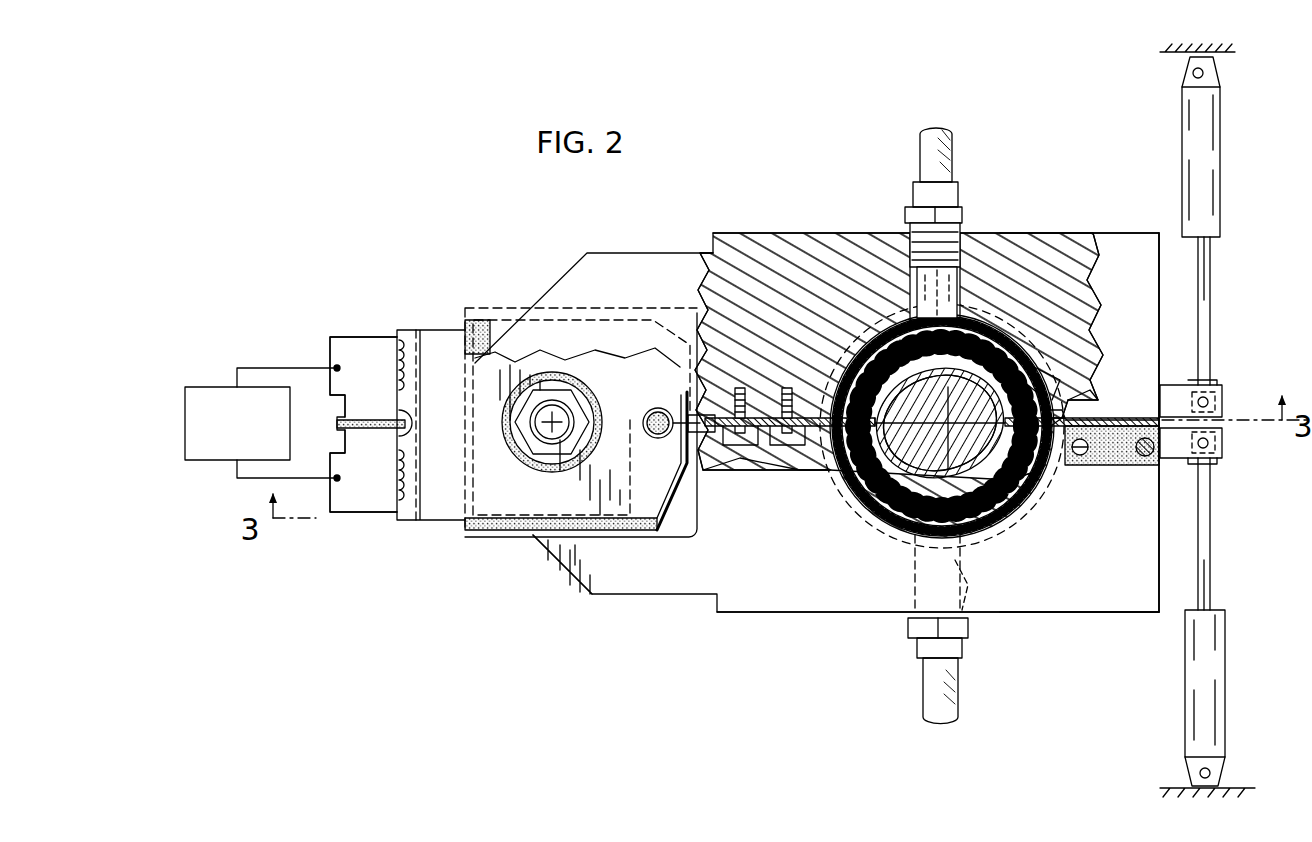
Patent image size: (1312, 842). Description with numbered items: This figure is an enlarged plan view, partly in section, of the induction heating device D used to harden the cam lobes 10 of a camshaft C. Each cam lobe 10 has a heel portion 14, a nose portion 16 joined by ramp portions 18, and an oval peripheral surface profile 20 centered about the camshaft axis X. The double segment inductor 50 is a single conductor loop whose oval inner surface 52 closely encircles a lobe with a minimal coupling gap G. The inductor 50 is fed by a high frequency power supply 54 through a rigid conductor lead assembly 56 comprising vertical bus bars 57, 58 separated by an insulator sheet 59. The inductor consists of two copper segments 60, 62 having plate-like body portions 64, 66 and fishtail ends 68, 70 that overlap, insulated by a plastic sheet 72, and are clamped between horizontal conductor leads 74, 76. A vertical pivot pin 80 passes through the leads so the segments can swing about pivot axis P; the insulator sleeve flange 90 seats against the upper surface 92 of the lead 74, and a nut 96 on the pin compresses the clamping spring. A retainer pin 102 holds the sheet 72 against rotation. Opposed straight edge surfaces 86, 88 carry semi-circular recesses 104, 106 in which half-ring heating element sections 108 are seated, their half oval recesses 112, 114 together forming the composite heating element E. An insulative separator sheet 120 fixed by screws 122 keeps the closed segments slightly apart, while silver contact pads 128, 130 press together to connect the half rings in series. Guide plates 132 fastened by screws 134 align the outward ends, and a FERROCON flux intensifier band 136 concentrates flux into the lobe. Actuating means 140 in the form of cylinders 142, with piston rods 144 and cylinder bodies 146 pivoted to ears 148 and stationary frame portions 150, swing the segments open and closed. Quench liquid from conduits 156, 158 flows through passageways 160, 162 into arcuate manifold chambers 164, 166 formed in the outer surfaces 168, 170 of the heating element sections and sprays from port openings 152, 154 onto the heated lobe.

The cam lobes 10 is at (830, 379).
The heel portion 14 is at (1035, 480).
The nose portion 16 is at (875, 395).
The connecting ramp portions 18 is at (888, 345).
The outer peripheral surface profile 20 is at (845, 470).
The double segment inductor 50 is at (1077, 222).
The cam lobe encircling inner surface 52 is at (995, 462).
The high frequency power supply 54 is at (225, 383).
The rigid conductor lead assembly 56 is at (420, 325).
The vertical conductor lead member 57 is at (356, 346).
The vertical conductor lead member 58 is at (363, 505).
The plastic insulator sheet 59 is at (375, 420).
The inductor segment 60 is at (748, 230).
The inductor segment 62 is at (768, 617).
The body portion 64 is at (1030, 240).
The body portion 66 is at (1042, 605).
The fishtail end portion 68 is at (582, 283).
The fishtail end portion 70 is at (687, 532).
The plastic insulator sheet 72 is at (505, 535).
The conductor lead 74 is at (438, 505).
The conductor lead 76 is at (456, 338).
The vertical pivot pin 80 is at (542, 436).
The straight edge surface 86 is at (1072, 415).
The straight edge surface 88 is at (1112, 457).
The outward flange 90 is at (552, 378).
The upper surface 92 is at (498, 497).
The nut 96 is at (580, 437).
The plastic retainer pin 102 is at (655, 415).
The semi-circular recess 104 is at (880, 352).
The semi-circular recess 106 is at (876, 500).
The half-ring shaped inductor heating element section 108 is at (1090, 385).
The half oval-shaped cam lobe accommodating recess 112 is at (946, 392).
The half oval-shaped cam lobe accommodating recess 114 is at (893, 425).
The insulative separator sheet 120 is at (795, 462).
The fastening screws 122 is at (740, 395).
The electrical contact pad 128 is at (1055, 366).
The electrical contact pad 130 is at (1040, 450).
The guide plates 132 is at (1128, 458).
The fastening screws 134 is at (1147, 455).
The flux intensifier band 136 is at (935, 580).
The actuating means 140 is at (1217, 246).
The pneumatic or hydraulic cylinders 142 is at (1222, 140).
The piston rods 144 is at (1208, 306).
The cylinders 146 is at (1193, 140).
The projecting ears 148 is at (1223, 400).
The stationary portion 150 is at (1184, 58).
The port openings 152 is at (980, 345).
The port openings 154 is at (905, 500).
The conduit 156 is at (930, 146).
The conduit 158 is at (928, 685).
The passageway 160 is at (920, 268).
The passageway 162 is at (966, 578).
The manifold chamber 164 is at (1015, 363).
The manifold chamber 166 is at (852, 470).
The semi-circular outer surface 168 is at (956, 320).
The semi-circular outer surface 170 is at (835, 447).
The vertical pivot axis P is at (550, 421).
The camshaft axis of rotation X is at (948, 420).
The induction coupling gap G is at (872, 411).
The induction heating device D is at (797, 205).
The camshaft C is at (990, 458).
The composite ring-shaped induction heating element E is at (968, 520).